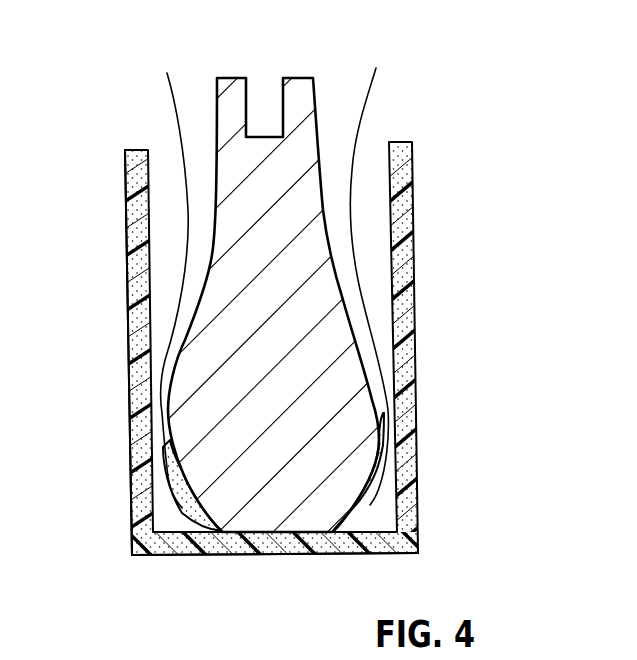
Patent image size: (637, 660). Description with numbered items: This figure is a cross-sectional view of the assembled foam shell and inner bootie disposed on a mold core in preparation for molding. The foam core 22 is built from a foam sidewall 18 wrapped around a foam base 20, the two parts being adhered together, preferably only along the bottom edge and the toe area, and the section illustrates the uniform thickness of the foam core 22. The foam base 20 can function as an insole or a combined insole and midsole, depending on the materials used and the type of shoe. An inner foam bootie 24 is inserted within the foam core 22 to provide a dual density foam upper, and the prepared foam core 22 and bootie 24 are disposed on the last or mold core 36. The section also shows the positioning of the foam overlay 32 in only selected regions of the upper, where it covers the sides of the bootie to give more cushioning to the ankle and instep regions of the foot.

The foam sidewall 18 is at (137, 463).
The foam base 20 is at (377, 552).
The foam core 22 is at (420, 336).
The inner foam bootie 24 is at (357, 128).
The foam overlay 32 is at (180, 498).
The mold core 36 is at (314, 81).